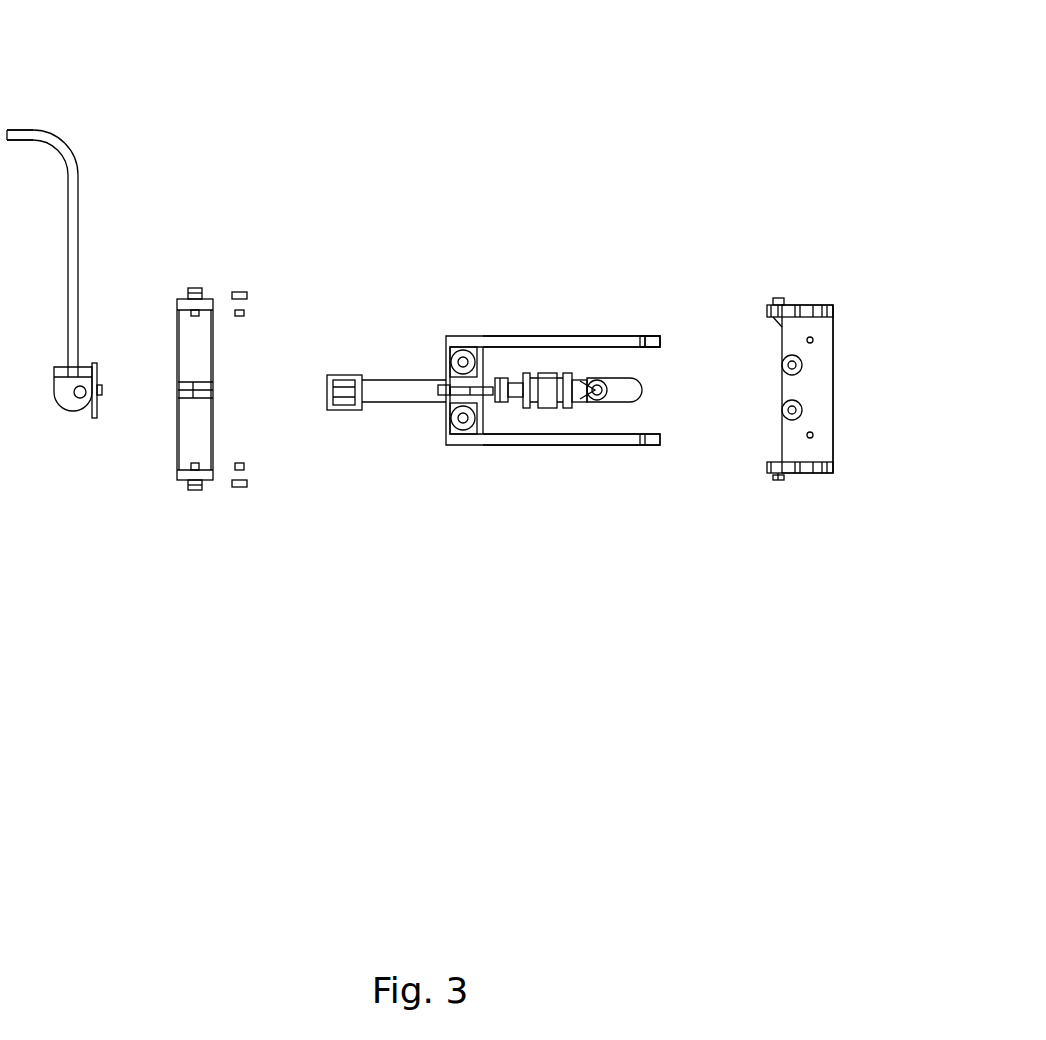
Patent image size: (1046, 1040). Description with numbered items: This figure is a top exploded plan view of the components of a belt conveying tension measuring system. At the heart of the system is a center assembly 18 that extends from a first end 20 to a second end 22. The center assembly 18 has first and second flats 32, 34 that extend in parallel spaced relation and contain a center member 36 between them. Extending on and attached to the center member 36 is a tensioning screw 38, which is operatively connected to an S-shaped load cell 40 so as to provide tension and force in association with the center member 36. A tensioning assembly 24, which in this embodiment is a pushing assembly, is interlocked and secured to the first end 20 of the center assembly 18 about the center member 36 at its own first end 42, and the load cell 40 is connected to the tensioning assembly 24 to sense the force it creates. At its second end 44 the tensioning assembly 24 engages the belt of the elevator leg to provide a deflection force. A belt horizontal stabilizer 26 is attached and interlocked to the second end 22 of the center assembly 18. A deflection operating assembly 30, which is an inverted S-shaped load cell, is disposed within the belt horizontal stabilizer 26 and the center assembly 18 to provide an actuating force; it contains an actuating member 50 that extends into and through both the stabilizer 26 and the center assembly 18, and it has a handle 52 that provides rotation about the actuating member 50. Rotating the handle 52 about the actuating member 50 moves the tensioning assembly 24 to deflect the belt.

The center assembly 18 is at (498, 280).
The first end 20 is at (655, 336).
The second end 22 is at (341, 383).
The tensioning assembly 24 is at (817, 305).
The belt horizontal stabilizer 26 is at (205, 332).
The deflection operating assembly 30 is at (73, 177).
The first flat 32 is at (583, 336).
The second flat 34 is at (540, 446).
The center member 36 is at (390, 393).
The tensioning screw 38 is at (445, 383).
The S-shaped load cell 40 is at (536, 373).
The first end 42 is at (837, 340).
The second end 44 is at (780, 300).
The actuating member 50 is at (96, 363).
The handle 52 is at (33, 135).